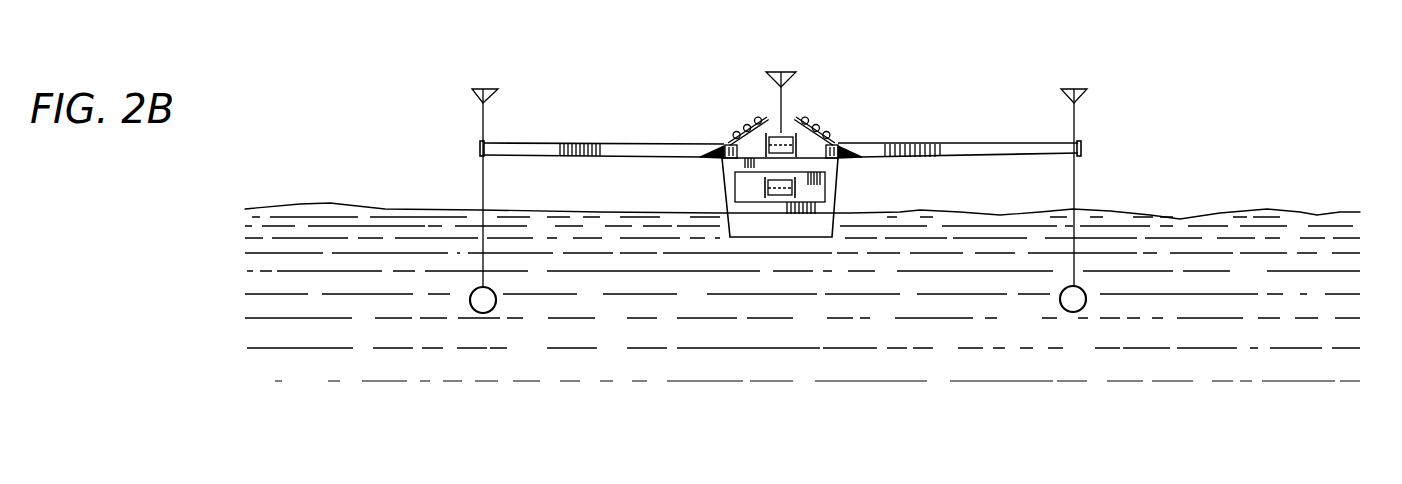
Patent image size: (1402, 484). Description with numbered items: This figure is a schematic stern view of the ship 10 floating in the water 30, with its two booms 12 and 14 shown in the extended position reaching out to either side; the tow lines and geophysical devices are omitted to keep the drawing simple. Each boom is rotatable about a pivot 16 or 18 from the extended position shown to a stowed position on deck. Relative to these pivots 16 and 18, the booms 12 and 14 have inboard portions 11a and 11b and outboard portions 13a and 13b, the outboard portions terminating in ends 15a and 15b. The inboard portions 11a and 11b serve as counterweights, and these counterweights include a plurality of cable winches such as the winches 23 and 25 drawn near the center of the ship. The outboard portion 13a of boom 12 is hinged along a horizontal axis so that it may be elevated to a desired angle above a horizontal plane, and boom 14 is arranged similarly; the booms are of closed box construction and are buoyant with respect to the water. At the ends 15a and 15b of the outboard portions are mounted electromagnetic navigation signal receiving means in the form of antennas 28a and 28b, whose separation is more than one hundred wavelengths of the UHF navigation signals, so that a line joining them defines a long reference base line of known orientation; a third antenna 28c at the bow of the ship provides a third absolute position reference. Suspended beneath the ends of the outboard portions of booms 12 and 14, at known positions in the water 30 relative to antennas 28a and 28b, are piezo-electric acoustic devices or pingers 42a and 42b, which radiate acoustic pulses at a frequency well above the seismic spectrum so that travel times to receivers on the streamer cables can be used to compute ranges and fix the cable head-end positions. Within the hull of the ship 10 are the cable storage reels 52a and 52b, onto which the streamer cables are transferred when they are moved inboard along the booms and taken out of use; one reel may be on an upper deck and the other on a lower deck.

The ship 10 is at (728, 201).
The inboard portion of boom 11a is at (834, 112).
The inboard portion of boom 11b is at (733, 112).
The boom 12 is at (1012, 143).
The outboard portion of boom 13a is at (951, 137).
The outboard portion of boom 13b is at (626, 137).
The boom 14 is at (543, 143).
The end of outboard portion 15a is at (1086, 145).
The end of outboard portion 15b is at (476, 145).
The pivot 16 is at (838, 148).
The pivot 18 is at (727, 148).
The cable winch 23 is at (809, 116).
The cable winch 25 is at (753, 116).
The antenna 28a is at (1076, 88).
The antenna 28b is at (480, 88).
The third antenna 28c is at (777, 71).
The water 30 is at (365, 228).
The acoustic device (pinger) 42a is at (1066, 311).
The acoustic device (pinger) 42b is at (488, 312).
The cable storage reel 52a is at (767, 160).
The cable storage reel 52b is at (788, 184).